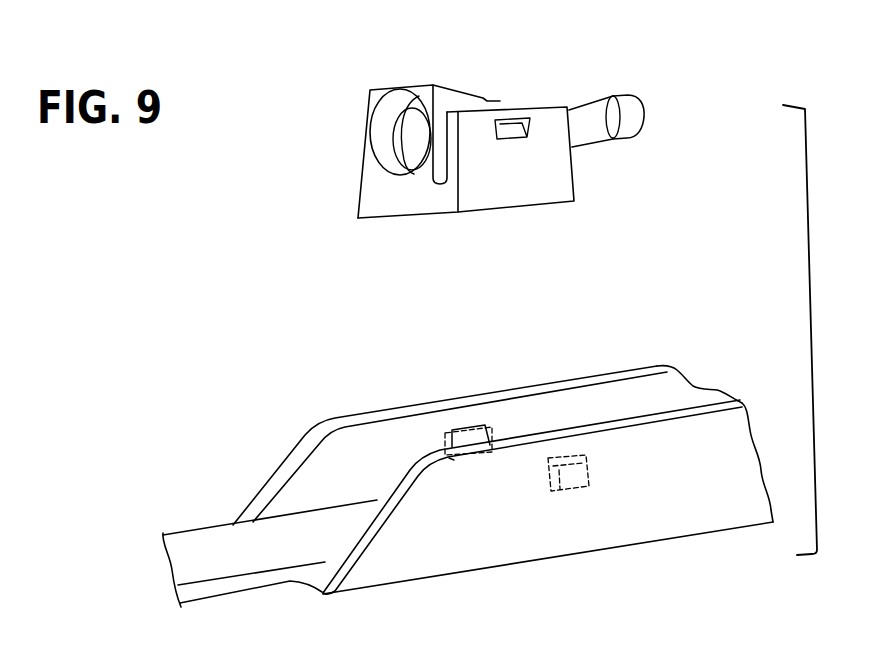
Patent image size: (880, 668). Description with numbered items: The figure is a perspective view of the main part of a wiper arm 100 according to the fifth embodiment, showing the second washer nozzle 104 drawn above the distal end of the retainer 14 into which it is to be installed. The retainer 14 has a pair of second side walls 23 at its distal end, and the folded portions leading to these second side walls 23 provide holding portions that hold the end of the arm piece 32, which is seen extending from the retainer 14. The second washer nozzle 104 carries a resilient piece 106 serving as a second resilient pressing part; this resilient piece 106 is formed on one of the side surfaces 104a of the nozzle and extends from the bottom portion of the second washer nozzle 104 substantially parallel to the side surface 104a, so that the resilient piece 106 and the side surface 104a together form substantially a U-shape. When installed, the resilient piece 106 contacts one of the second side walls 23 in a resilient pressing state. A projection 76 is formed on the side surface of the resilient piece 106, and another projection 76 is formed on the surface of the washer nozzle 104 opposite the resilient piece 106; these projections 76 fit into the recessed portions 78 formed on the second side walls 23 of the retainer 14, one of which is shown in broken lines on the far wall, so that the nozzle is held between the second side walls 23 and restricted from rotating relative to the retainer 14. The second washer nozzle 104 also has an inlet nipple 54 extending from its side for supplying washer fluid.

The wiper arm 100 is at (293, 268).
The second washer nozzle 104 is at (398, 83).
The side surface 104a is at (448, 96).
The resilient piece 106 is at (554, 120).
The projection 76 is at (513, 120).
The inlet nipple 54 is at (620, 92).
The second side wall 23 is at (291, 472).
The retainer 14 is at (430, 578).
The arm piece 32 is at (220, 546).
The recessed portion 78 is at (470, 430).